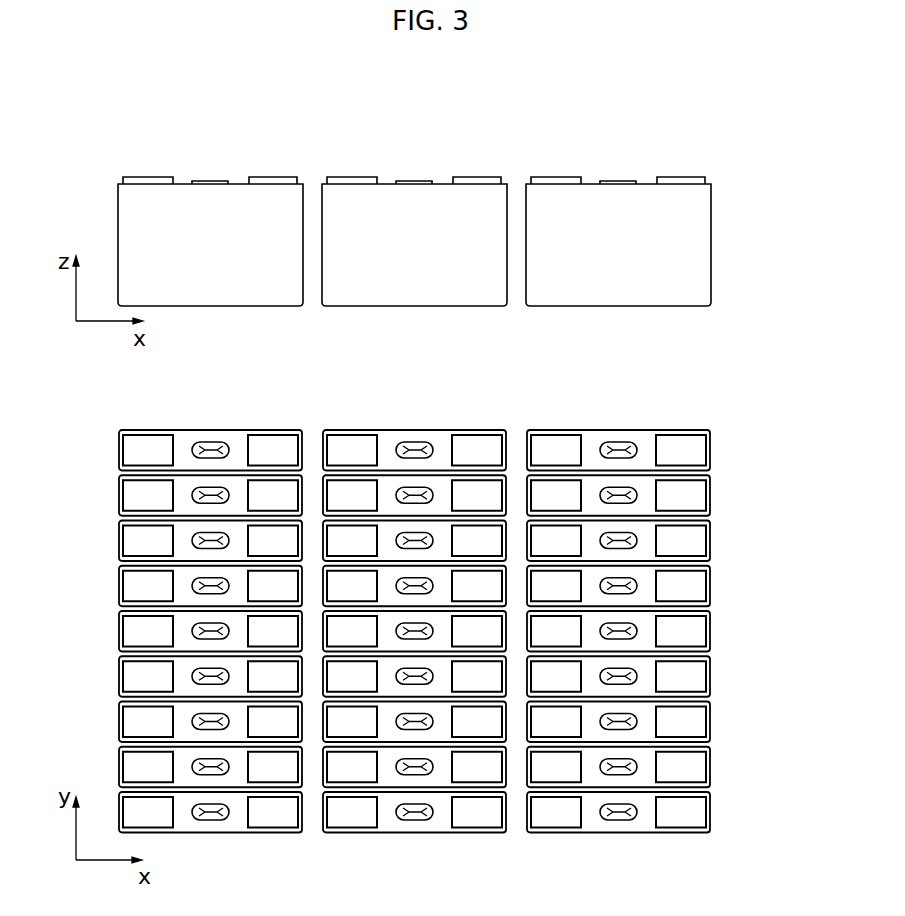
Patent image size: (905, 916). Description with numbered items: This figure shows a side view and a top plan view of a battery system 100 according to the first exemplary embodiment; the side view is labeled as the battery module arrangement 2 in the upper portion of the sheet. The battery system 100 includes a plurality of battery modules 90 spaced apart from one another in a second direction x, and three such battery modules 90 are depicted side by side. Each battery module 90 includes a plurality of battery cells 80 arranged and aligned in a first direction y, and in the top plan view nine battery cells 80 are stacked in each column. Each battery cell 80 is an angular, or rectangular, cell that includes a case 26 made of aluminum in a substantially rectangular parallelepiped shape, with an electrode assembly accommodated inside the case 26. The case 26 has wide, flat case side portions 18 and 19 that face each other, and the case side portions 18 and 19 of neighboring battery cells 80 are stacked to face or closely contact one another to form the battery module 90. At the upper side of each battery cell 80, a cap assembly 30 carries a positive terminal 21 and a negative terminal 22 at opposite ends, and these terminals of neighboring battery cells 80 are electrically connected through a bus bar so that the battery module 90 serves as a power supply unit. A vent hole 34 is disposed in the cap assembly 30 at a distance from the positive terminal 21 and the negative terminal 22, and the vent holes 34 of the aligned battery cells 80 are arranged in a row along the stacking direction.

The battery module 2 is at (423, 124).
The case side portion 18 is at (581, 287).
The case side portion 19 is at (238, 430).
The positive terminal 21 is at (695, 449).
The negative terminal 22 is at (558, 442).
The case 26 is at (700, 285).
The cap assembly 30 is at (528, 429).
The vent hole 34 is at (617, 447).
The battery cell 80 is at (710, 211).
The battery module 90 is at (212, 833).
The battery system 100 is at (745, 245).